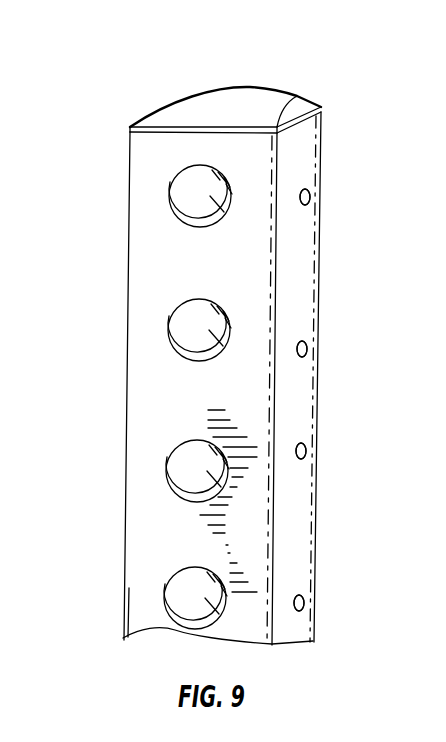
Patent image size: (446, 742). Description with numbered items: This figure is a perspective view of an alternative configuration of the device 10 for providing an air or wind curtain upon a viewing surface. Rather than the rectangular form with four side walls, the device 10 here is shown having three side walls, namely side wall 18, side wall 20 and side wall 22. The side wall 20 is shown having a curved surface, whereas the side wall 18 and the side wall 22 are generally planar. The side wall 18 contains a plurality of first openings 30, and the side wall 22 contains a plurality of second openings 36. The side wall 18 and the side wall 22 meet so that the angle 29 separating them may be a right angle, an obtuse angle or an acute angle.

The device 10 is at (157, 84).
The side wall 18 is at (183, 395).
The side wall 20 is at (250, 88).
The side wall 22 is at (298, 475).
The angle 29 is at (284, 99).
The first openings 30 is at (197, 167).
The second openings 36 is at (305, 350).